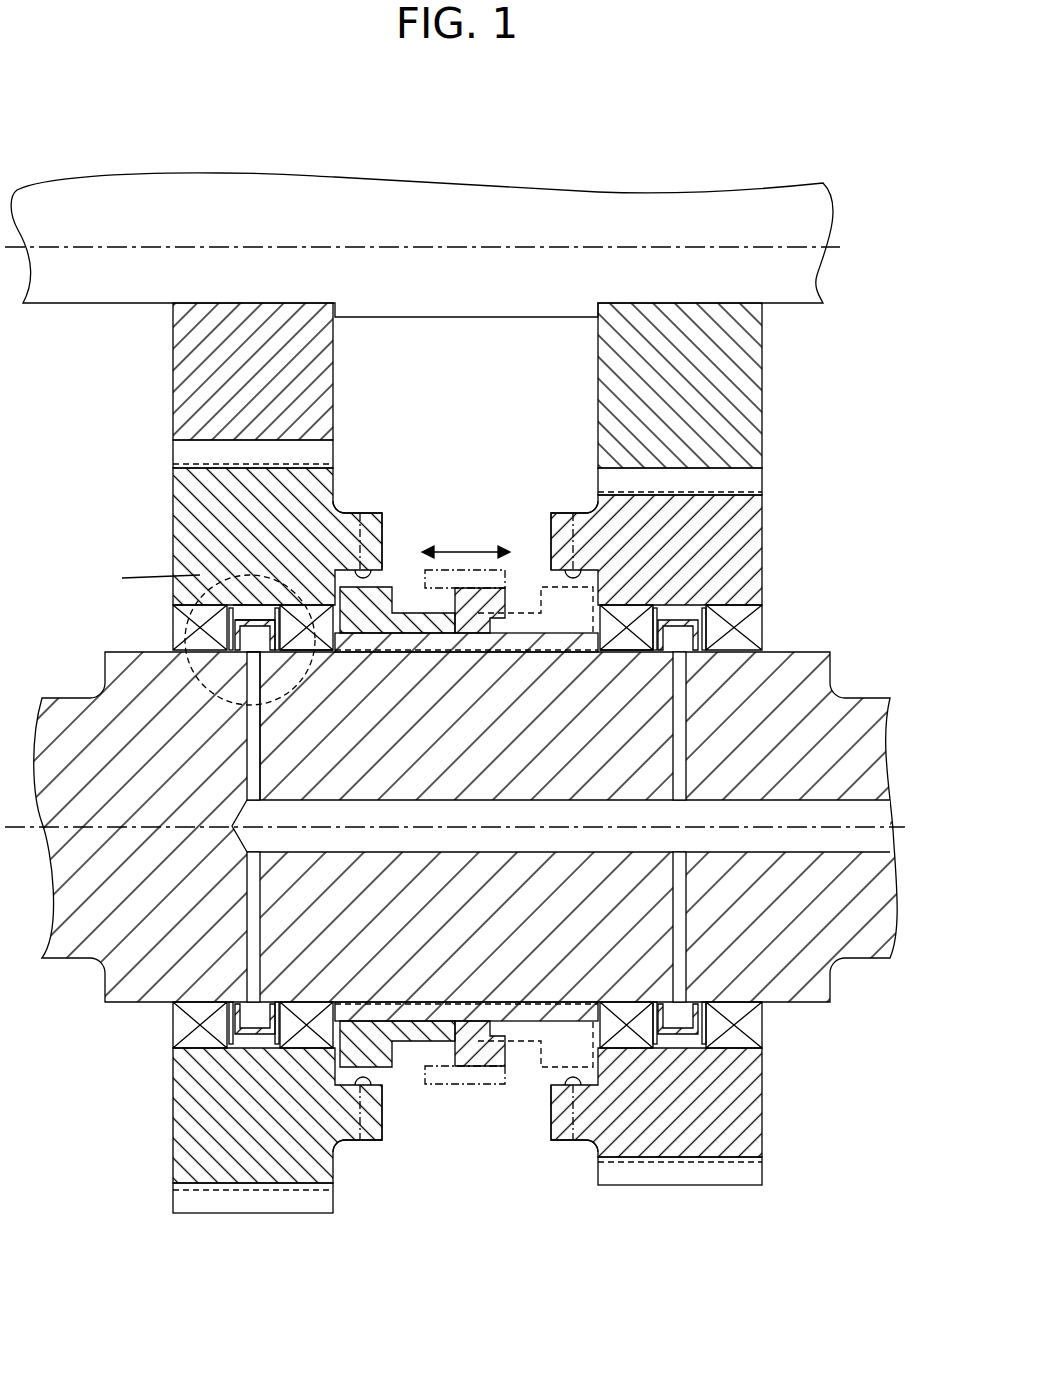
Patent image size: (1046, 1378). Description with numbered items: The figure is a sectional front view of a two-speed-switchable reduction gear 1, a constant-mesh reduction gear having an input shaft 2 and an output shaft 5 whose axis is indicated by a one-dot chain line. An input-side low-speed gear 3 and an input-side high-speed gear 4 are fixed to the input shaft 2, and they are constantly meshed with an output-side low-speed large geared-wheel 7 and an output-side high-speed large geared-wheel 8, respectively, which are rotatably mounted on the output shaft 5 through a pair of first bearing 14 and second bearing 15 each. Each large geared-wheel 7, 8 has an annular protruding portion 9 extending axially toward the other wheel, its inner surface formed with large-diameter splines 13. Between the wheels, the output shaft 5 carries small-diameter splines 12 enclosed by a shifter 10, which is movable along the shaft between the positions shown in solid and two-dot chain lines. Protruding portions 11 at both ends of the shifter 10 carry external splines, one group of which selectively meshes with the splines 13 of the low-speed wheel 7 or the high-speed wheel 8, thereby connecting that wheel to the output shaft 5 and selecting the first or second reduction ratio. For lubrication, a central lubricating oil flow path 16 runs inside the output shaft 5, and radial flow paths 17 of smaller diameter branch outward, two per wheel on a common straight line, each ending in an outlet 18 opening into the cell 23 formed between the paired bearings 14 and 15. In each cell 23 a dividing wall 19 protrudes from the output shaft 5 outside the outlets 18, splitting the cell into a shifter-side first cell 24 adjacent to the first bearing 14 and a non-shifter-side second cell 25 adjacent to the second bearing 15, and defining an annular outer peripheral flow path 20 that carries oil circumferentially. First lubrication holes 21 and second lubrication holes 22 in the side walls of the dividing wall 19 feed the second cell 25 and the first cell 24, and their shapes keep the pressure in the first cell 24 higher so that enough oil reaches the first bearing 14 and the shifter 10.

The two-speed-switchable reduction gear 1 is at (464, 650).
The input shaft 2 is at (65, 285).
The input-side low-speed gear 3 is at (195, 395).
The input-side high-speed gear 4 is at (750, 395).
The output shaft 5 is at (464, 827).
The output-side low-speed large geared-wheel 7 is at (195, 545).
The output-side high-speed large geared-wheel 8 is at (760, 575).
The protruding portion 9 is at (375, 510).
The shifter 10 is at (405, 640).
The protruding portions 11 is at (398, 605).
The small-diameter splines 12 is at (462, 650).
The large-diameter splines 13 is at (361, 513).
The first bearing 14 is at (305, 652).
The second bearing 15 is at (180, 622).
The central lubricating oil flow path 16 is at (400, 815).
The radial flow paths 17 is at (247, 790).
The outlet 18 is at (255, 652).
The dividing wall 19 is at (230, 655).
The outer peripheral flow path 20 is at (272, 652).
The first lubrication holes 21 is at (290, 655).
The second lubrication holes 22 is at (232, 640).
The cell 23 is at (468, 745).
The first cell 24 is at (240, 560).
The second cell 25 is at (228, 590).